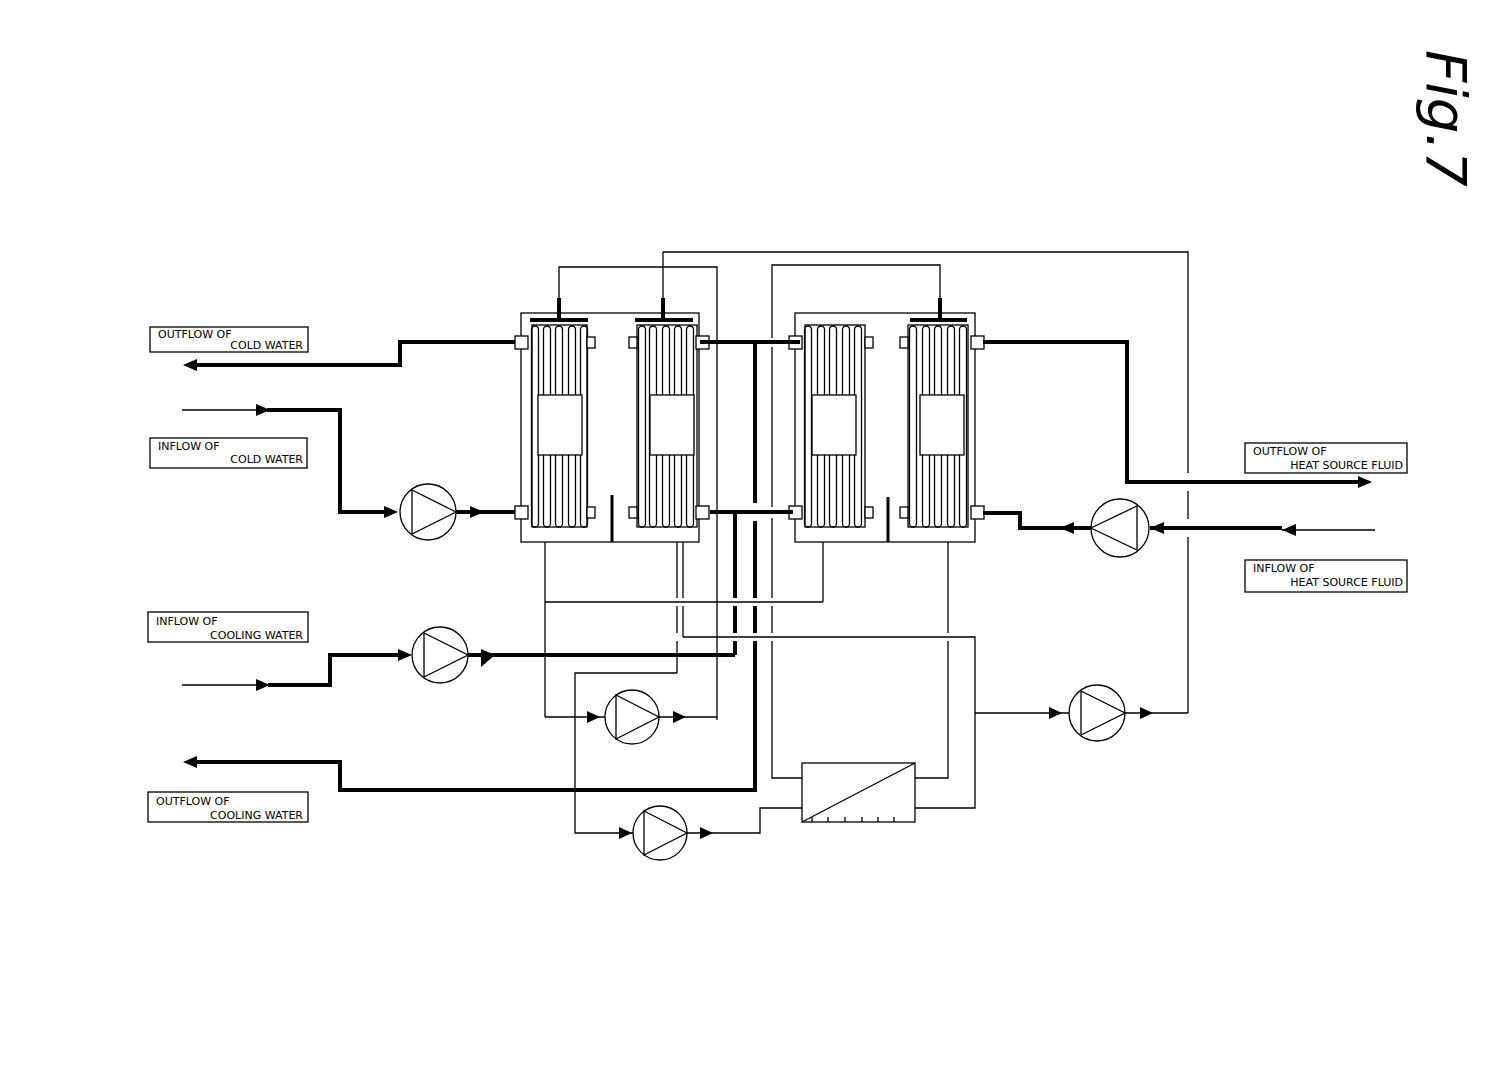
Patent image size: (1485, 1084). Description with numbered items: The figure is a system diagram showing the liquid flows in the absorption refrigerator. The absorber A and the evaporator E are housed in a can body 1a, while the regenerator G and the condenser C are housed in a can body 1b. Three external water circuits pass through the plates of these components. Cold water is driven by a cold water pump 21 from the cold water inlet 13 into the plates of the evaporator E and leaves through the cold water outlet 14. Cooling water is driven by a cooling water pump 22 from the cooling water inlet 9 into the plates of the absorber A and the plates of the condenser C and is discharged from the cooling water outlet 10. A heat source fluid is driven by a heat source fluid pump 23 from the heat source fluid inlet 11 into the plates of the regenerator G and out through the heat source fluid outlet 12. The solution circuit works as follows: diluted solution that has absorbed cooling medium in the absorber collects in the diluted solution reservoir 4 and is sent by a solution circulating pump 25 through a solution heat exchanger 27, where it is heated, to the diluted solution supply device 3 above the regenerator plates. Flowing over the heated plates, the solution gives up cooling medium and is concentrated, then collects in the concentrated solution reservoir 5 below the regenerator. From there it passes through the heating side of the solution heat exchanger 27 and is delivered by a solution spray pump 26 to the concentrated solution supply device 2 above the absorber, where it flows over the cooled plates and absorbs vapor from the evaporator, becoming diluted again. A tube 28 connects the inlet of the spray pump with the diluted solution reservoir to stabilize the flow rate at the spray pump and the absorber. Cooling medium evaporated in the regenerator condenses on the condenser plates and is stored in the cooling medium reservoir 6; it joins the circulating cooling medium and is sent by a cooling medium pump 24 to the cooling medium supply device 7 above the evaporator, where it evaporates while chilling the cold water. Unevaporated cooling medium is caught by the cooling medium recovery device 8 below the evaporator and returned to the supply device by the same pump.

The can body 1a is at (612, 313).
The can body 1b is at (866, 313).
The concentrated solution supply device 2 is at (680, 318).
The diluted solution supply device 3 is at (950, 318).
The diluted solution reservoir 4 is at (660, 542).
The concentrated solution reservoir 5 is at (920, 542).
The cooling medium reservoir 6 is at (855, 542).
The cooling medium supply device 7 is at (568, 313).
The cooling medium recovery device 8 is at (575, 542).
The cooling water inlet 9 is at (706, 520).
The cooling water outlet 10 is at (706, 336).
The heat source fluid inlet 11 is at (980, 505).
The heat source fluid outlet 12 is at (985, 336).
The cold water inlet 13 is at (517, 506).
The cold water outlet 14 is at (518, 336).
The cold water pump 21 is at (428, 484).
The cooling water pump 22 is at (436, 628).
The heat source fluid pump 23 is at (1112, 557).
The cooling medium pump 24 is at (655, 736).
The solution circulating pump 25 is at (685, 850).
The solution spray pump 26 is at (1097, 685).
The solution heat exchanger 27 is at (855, 763).
The tube 28 is at (857, 637).